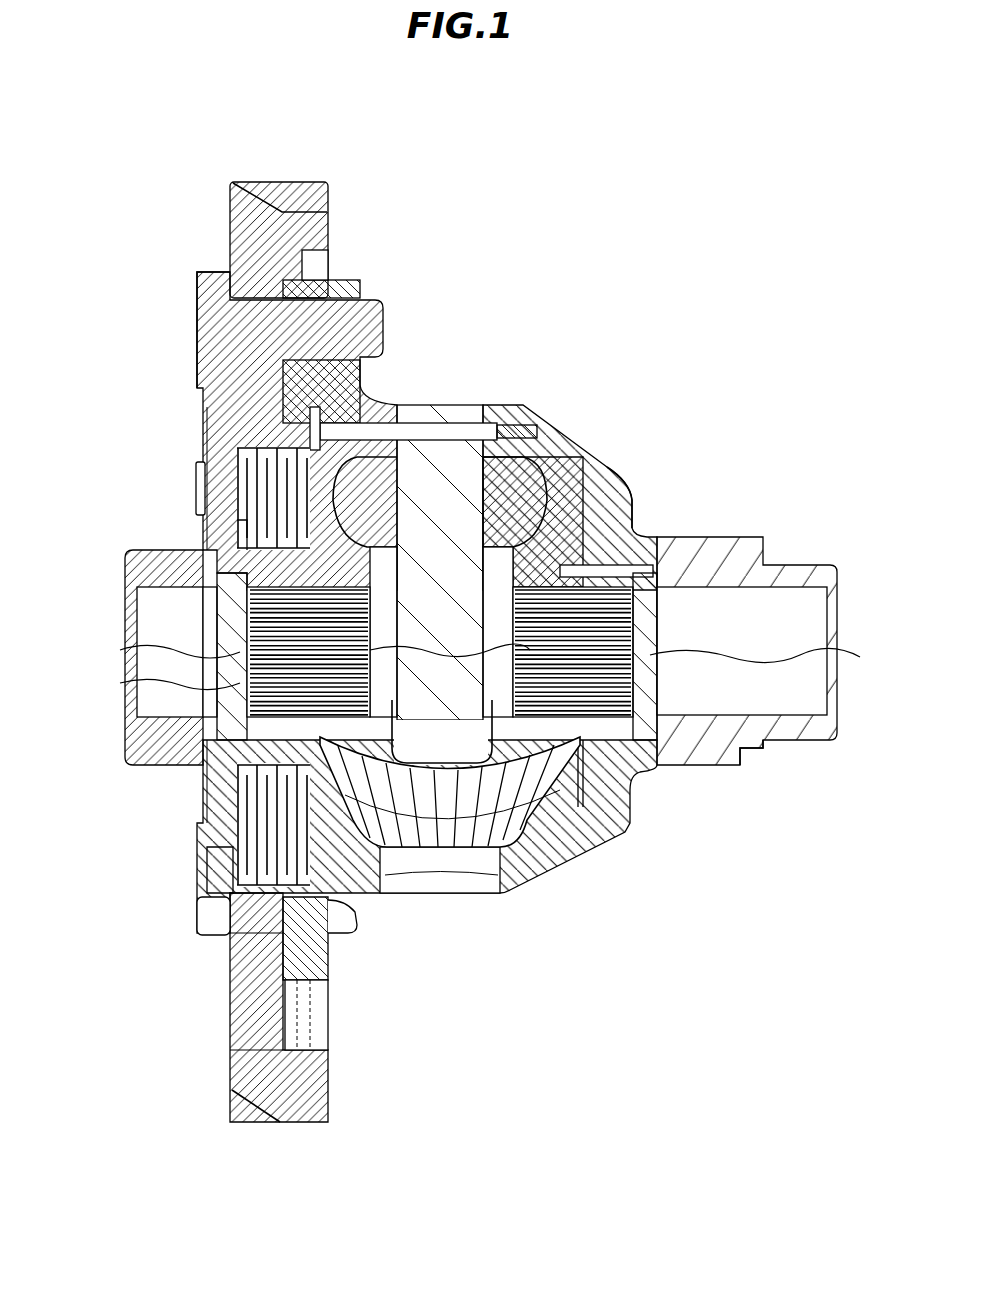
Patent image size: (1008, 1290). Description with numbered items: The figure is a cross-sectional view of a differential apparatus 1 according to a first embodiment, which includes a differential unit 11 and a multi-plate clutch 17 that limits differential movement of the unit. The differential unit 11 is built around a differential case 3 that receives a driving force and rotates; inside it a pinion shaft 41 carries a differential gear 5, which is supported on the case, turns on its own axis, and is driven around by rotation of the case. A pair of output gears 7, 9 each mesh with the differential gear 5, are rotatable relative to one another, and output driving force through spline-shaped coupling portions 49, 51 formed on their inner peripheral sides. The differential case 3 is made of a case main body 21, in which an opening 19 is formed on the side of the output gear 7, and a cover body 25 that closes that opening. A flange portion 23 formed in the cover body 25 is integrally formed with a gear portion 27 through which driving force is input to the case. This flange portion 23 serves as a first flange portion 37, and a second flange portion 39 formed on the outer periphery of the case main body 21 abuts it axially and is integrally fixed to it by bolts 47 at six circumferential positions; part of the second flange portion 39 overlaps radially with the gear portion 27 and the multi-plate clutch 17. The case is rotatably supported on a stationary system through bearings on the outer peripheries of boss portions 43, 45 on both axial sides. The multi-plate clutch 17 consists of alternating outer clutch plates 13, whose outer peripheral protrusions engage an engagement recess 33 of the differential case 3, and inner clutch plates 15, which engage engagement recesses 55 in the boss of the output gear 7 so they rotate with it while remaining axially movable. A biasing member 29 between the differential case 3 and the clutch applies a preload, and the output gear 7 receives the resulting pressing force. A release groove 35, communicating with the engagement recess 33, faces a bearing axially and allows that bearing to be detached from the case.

The differential apparatus 1 is at (596, 232).
The differential case 3 is at (520, 405).
The differential gear 5 is at (515, 497).
The output gear 7 is at (370, 907).
The output gear 9 is at (548, 830).
The differential unit 11 is at (464, 910).
The outer clutch plates 13 is at (230, 897).
The inner clutch plates 15 is at (312, 427).
The multi-plate clutch 17 is at (210, 383).
The opening 19 is at (320, 415).
The case main body 21 is at (610, 465).
The flange portion 23 is at (302, 1132).
The cover body 25 is at (215, 490).
The gear portion 27 is at (297, 193).
The biasing member 29 is at (235, 810).
The engagement recess 33 is at (232, 925).
The release groove 35 is at (220, 870).
The first flange portion 37 is at (243, 1055).
The second flange portion 39 is at (322, 935).
The pinion shaft 41 is at (460, 457).
The boss portion 43 is at (135, 738).
The boss portion 45 is at (807, 560).
The bolts 47 is at (263, 307).
The spline-shaped coupling portion 49 is at (245, 690).
The spline-shaped coupling portion 51 is at (740, 762).
The engagement recesses 55 is at (247, 525).